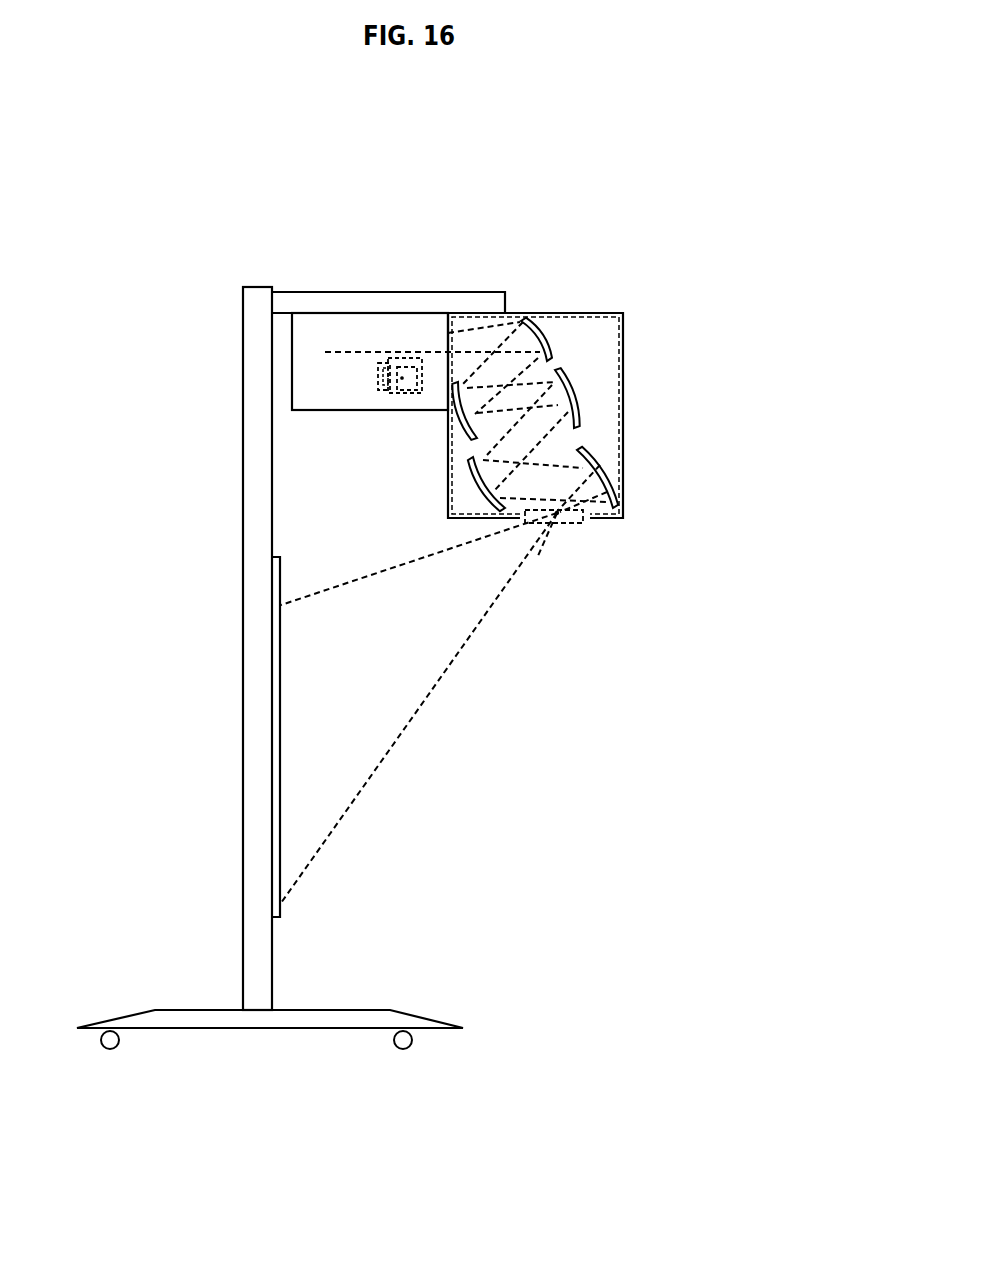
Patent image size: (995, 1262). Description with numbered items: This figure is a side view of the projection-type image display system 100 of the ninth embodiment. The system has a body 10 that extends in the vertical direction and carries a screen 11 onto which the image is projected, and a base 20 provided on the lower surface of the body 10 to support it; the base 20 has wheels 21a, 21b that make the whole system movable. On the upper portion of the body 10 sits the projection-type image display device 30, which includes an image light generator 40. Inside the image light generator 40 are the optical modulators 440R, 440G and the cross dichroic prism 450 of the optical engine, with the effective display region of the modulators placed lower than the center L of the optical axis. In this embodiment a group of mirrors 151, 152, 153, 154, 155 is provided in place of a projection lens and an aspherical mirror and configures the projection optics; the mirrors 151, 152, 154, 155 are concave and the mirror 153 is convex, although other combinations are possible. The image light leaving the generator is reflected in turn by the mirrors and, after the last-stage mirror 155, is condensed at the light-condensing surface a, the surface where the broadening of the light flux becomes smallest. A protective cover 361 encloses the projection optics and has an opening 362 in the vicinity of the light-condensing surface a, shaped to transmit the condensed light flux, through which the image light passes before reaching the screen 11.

The projection-type image display system 100 is at (508, 158).
The body 10 is at (243, 840).
The screen 11 is at (281, 903).
The base 20 is at (368, 1018).
The wheel 21a is at (110, 1049).
The wheel 21b is at (405, 1050).
The image light generator 40 is at (366, 313).
The center of optical axis L is at (362, 348).
The cross dichroic prism 450 is at (405, 397).
The optical modulator 440R is at (390, 395).
The optical modulator 440G is at (378, 376).
The projection-type image display device 30 is at (625, 616).
The protective cover 361 is at (593, 312).
The opening 362 is at (557, 524).
The light-condensing surface a is at (565, 520).
The mirror 151 is at (540, 338).
The mirror 152 is at (470, 436).
The mirror 153 is at (576, 406).
The mirror 154 is at (476, 468).
The mirror 155 is at (614, 486).